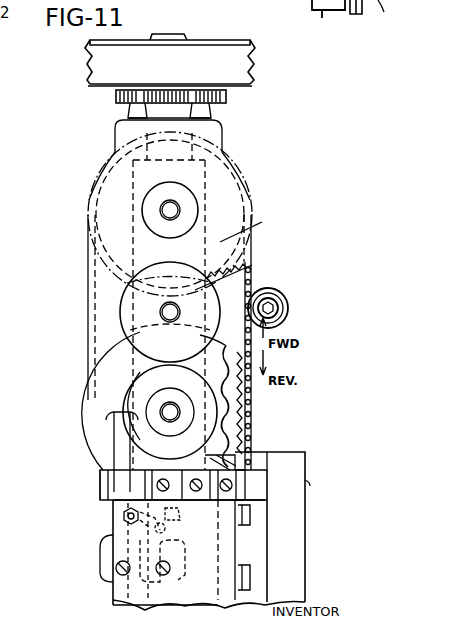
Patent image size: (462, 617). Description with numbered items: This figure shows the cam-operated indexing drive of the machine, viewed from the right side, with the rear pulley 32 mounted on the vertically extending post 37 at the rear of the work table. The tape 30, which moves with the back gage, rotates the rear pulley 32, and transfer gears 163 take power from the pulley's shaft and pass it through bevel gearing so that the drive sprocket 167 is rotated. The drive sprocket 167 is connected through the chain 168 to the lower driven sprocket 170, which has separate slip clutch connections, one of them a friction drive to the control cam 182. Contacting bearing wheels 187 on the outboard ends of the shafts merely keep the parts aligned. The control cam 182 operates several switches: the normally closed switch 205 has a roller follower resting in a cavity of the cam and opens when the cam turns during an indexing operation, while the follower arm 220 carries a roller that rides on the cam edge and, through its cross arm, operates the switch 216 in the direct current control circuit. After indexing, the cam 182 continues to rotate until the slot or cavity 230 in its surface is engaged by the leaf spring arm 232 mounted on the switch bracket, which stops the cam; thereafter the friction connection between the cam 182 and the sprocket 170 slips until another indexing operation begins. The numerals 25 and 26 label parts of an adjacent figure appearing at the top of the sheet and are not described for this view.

The fragment element 25 is at (327, 24).
The fragment element 26 is at (367, 19).
The tape 30 is at (90, 70).
The rear pulley 32 is at (238, 90).
The transfer gears 163 is at (116, 97).
The post 37 is at (222, 132).
The bearing wheels 187 is at (122, 318).
The drive sprocket 167 is at (228, 242).
The chain 168 is at (252, 272).
The control cam 182 is at (87, 395).
The driven sprocket 170 is at (240, 408).
The slot or cavity 230 is at (106, 426).
The leaf spring arm 232 is at (116, 446).
The normally closed switch 205 is at (240, 442).
The follower arm 220 is at (120, 528).
The switch 216 is at (105, 558).